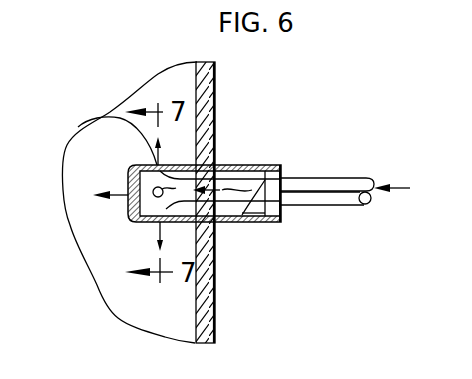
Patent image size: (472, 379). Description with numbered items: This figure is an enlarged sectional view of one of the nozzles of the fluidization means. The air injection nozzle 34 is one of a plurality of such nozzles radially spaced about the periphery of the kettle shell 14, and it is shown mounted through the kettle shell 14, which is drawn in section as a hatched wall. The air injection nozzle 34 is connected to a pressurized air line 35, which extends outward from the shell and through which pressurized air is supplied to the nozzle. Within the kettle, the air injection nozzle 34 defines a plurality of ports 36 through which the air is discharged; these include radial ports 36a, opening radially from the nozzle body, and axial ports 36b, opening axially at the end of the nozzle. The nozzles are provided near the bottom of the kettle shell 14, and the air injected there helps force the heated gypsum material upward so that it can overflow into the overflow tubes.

The kettle shell 14 is at (216, 90).
The air injection nozzle 34 is at (254, 149).
The pressurized air line 35 is at (302, 205).
The ports 36 is at (79, 126).
The radial ports 36a is at (128, 150).
The axial ports 36b is at (128, 187).